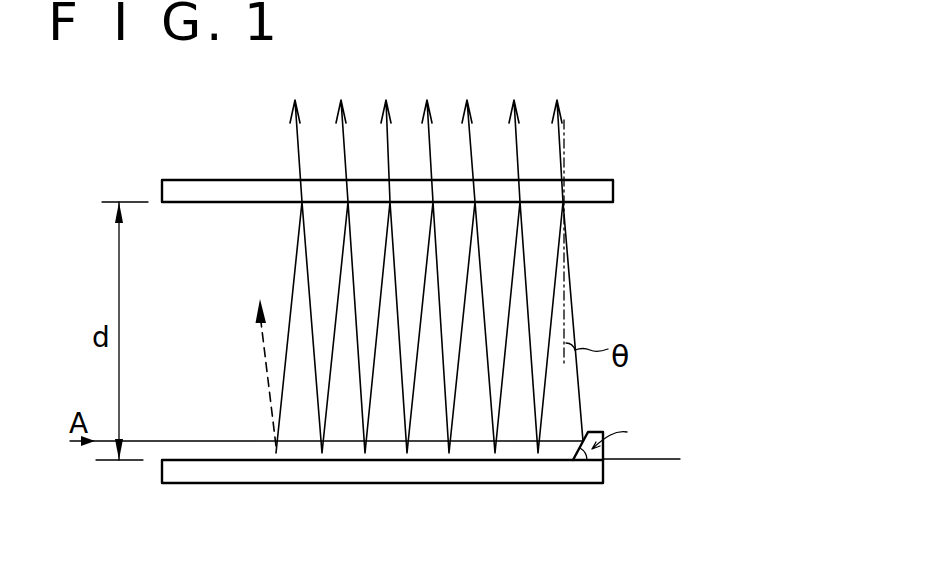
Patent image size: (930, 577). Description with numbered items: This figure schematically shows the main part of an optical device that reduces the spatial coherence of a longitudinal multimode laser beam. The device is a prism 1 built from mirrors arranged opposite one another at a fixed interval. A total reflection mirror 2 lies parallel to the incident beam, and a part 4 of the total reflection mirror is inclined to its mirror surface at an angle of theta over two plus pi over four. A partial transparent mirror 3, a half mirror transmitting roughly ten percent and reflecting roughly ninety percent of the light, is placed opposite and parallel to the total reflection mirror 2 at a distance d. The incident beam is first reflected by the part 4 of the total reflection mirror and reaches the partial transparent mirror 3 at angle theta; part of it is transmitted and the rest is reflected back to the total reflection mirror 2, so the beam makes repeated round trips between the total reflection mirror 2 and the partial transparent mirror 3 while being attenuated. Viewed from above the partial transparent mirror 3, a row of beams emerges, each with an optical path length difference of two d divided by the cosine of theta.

The prism 1 is at (468, 461).
The total reflection mirror 2 is at (205, 473).
The partial transparent mirror 3 is at (185, 189).
The part of the total reflection mirror 4 is at (589, 416).